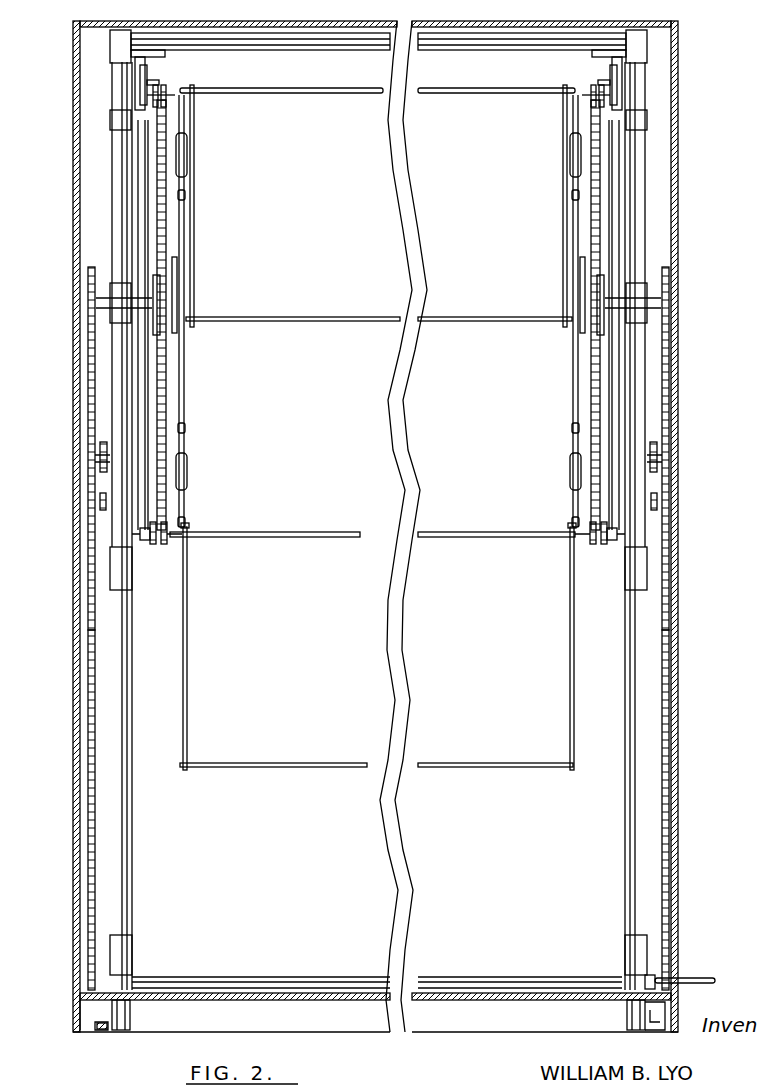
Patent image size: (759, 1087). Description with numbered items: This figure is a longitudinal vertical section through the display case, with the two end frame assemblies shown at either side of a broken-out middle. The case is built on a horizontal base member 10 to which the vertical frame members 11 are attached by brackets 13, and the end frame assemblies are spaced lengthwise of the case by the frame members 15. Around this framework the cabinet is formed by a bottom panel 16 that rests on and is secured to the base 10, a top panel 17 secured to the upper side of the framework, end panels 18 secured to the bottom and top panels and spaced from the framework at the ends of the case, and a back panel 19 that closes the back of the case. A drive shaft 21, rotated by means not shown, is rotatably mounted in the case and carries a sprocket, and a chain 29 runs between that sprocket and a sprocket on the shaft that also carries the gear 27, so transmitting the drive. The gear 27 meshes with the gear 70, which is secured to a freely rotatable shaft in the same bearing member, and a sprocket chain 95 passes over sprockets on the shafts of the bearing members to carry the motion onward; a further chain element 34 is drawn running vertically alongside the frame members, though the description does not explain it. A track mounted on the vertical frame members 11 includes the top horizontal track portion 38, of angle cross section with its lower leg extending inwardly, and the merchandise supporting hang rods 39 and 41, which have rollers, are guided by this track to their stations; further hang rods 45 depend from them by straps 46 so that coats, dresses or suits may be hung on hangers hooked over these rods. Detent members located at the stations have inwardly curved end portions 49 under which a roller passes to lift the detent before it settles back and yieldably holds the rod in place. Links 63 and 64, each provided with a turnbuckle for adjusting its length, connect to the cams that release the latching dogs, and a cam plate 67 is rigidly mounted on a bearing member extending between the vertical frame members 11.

The horizontal base member 10 is at (100, 1031).
The vertical frame member 11 is at (133, 810).
The bracket 13 is at (130, 1018).
The frame member 15 is at (270, 34).
The bottom panel 16 is at (285, 985).
The top panel 17 is at (462, 34).
The end panel 18 is at (78, 608).
The back panel 19 is at (485, 855).
The drive shaft 21 is at (700, 978).
The gear 27 is at (100, 503).
The chain 29 is at (90, 726).
The chain 34 is at (167, 408).
The top horizontal track portion 38 is at (138, 100).
The hang rod 39 is at (432, 537).
The hang rod 41 is at (440, 93).
The hang rod 45 is at (432, 321).
The strap 46 is at (194, 210).
The inwardly curved portion 49 is at (147, 75).
The link 63 is at (186, 372).
The link 64 is at (184, 240).
The cam plate 67 is at (156, 284).
The gear 70 is at (100, 452).
The sprocket chain 95 is at (90, 382).